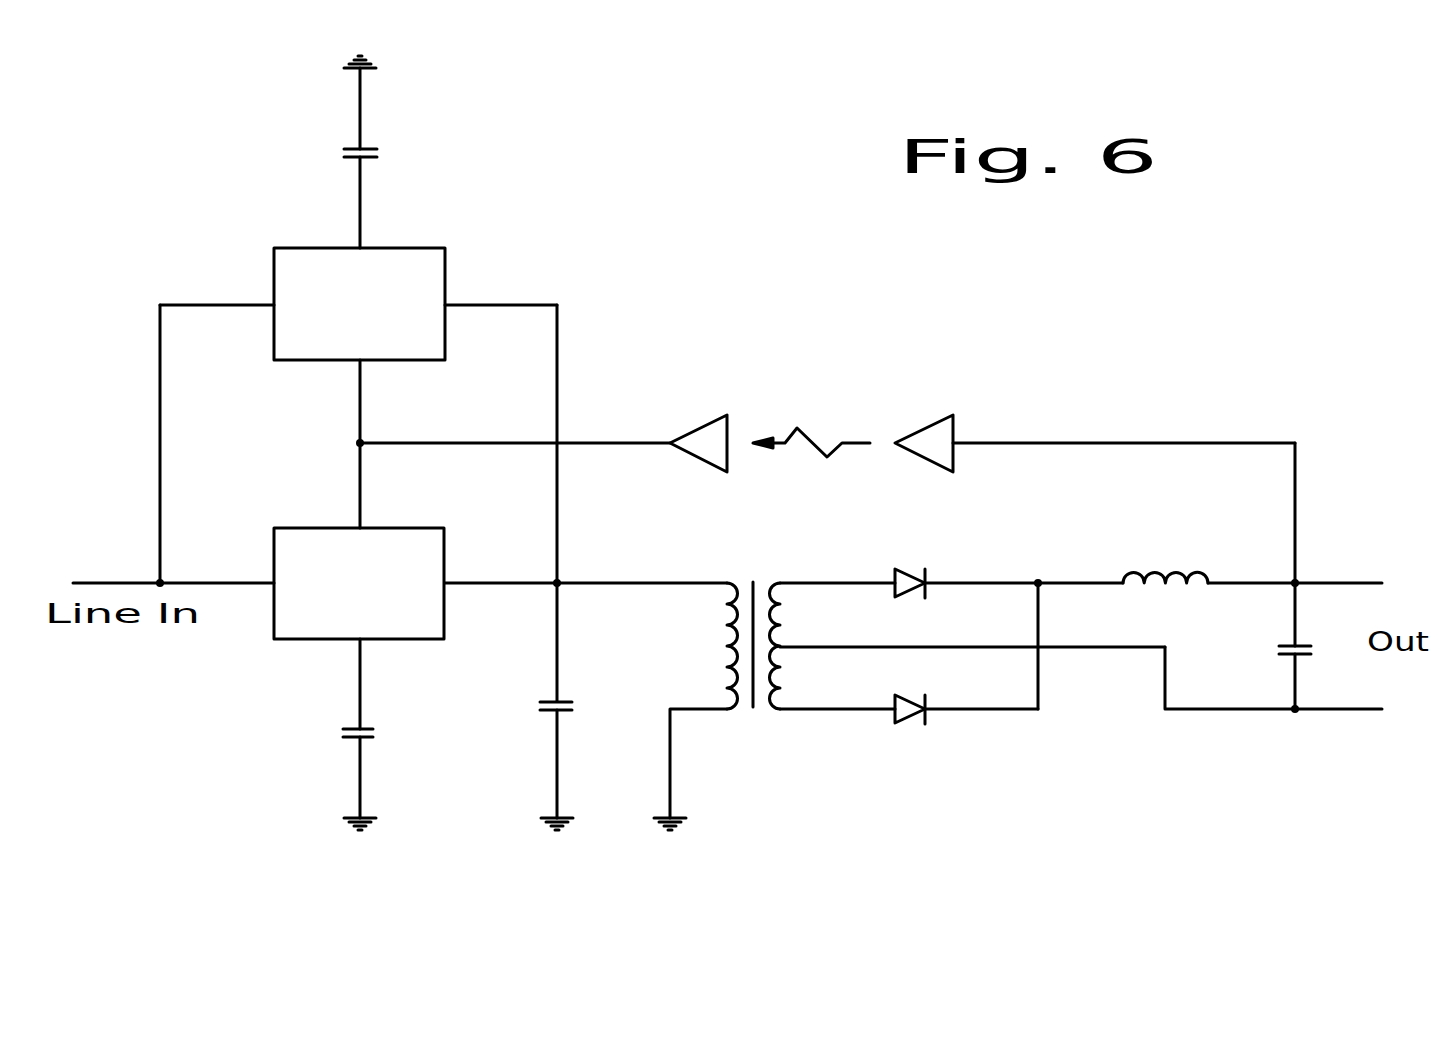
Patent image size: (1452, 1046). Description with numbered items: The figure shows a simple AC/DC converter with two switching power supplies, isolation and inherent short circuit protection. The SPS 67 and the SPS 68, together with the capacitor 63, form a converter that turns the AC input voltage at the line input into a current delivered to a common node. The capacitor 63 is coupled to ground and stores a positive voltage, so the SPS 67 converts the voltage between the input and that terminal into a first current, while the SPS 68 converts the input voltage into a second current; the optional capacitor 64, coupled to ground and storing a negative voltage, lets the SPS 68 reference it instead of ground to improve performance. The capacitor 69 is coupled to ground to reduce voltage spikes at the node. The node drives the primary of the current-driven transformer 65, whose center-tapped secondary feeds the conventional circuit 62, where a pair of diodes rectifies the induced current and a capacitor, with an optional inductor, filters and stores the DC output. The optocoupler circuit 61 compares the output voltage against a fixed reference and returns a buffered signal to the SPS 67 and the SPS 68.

The optocoupler circuit 61 is at (953, 375).
The conventional circuit 62 is at (1110, 733).
The capacitor 63 is at (372, 153).
The capacitor 64 is at (348, 740).
The transformer 65 is at (753, 707).
The SPS 67 is at (303, 248).
The SPS 68 is at (303, 528).
The capacitor 69 is at (545, 712).